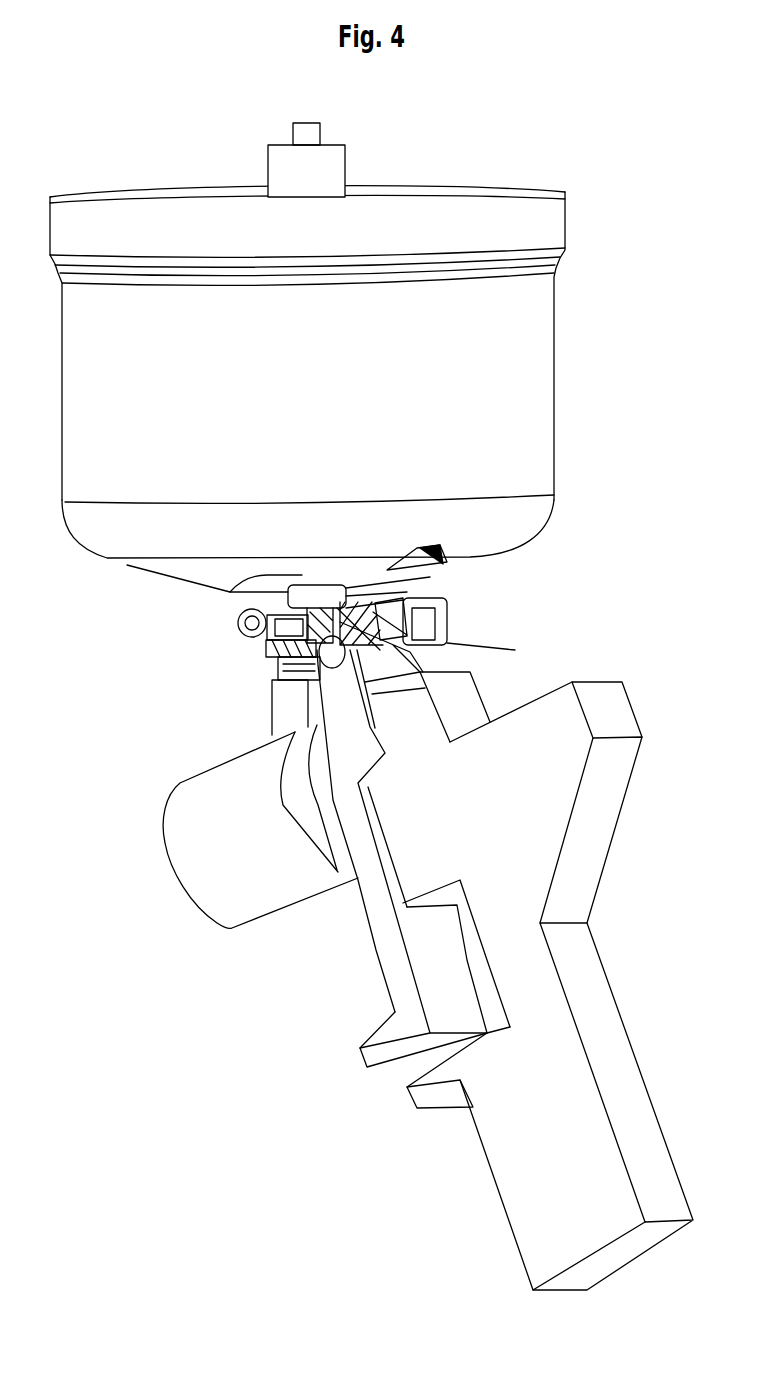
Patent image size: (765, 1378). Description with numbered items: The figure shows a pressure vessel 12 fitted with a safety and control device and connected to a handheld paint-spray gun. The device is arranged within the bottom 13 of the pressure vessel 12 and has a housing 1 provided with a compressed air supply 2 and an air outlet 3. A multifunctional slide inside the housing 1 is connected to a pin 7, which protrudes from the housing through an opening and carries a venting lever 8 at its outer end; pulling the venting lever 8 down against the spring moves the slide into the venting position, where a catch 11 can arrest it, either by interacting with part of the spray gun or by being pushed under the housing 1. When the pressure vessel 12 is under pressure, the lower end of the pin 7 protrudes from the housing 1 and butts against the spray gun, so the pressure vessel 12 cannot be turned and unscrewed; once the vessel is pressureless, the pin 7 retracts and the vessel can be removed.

The housing 1 is at (447, 617).
The compressed air supply 2 is at (447, 561).
The air outlet 3 is at (455, 566).
The pin 7 is at (270, 652).
The venting lever 8 is at (472, 673).
The catch 11 is at (425, 666).
The pressure vessel 12 is at (220, 458).
The bottom 13 is at (230, 592).